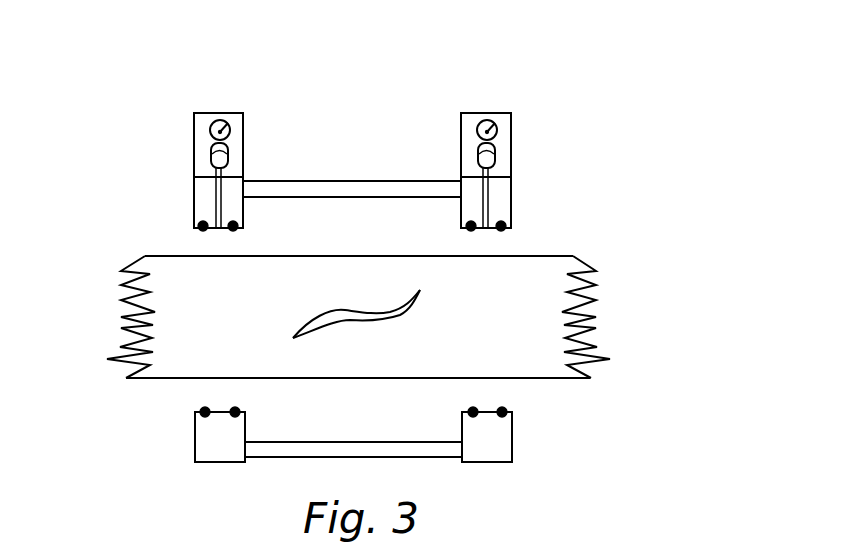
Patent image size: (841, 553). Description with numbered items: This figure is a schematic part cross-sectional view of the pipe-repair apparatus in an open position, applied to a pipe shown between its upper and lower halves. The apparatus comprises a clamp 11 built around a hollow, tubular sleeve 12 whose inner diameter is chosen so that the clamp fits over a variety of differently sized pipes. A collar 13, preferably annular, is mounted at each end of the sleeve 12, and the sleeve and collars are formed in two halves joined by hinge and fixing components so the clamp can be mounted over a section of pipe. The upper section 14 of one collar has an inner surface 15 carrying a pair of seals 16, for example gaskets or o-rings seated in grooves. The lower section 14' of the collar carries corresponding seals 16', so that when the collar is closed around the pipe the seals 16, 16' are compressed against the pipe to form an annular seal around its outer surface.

The clamp 11 is at (585, 153).
The hollow, tubular sleeve 12 is at (360, 181).
The collar 13 is at (213, 98).
The upper section 14 is at (161, 170).
The inner surface 15 is at (195, 228).
The seals 16 is at (386, 227).
The lower section 14' is at (161, 430).
The seals 16' is at (393, 417).